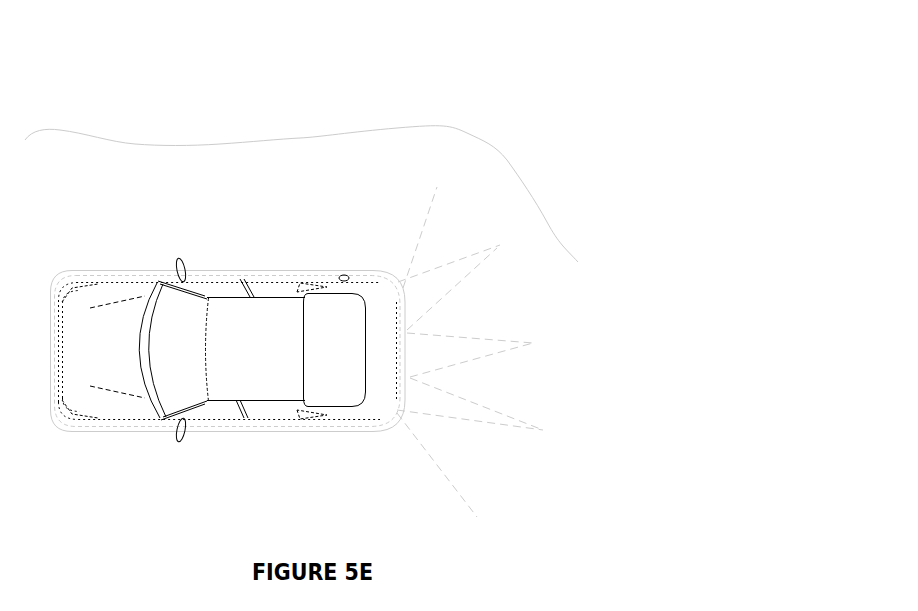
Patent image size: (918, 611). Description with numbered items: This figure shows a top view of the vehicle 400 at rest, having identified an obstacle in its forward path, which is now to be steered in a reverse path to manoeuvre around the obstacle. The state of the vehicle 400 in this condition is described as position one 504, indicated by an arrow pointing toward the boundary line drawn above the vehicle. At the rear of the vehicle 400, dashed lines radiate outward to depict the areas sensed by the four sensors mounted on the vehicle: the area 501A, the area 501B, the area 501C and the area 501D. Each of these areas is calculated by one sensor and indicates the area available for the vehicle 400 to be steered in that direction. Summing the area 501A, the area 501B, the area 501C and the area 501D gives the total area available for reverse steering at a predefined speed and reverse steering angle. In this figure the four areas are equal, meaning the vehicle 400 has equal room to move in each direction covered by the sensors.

The position 1 504 is at (308, 88).
The vehicle 400 is at (85, 273).
The area 501A is at (422, 228).
The area 501B is at (581, 304).
The area 501C is at (585, 382).
The area 501D is at (422, 443).